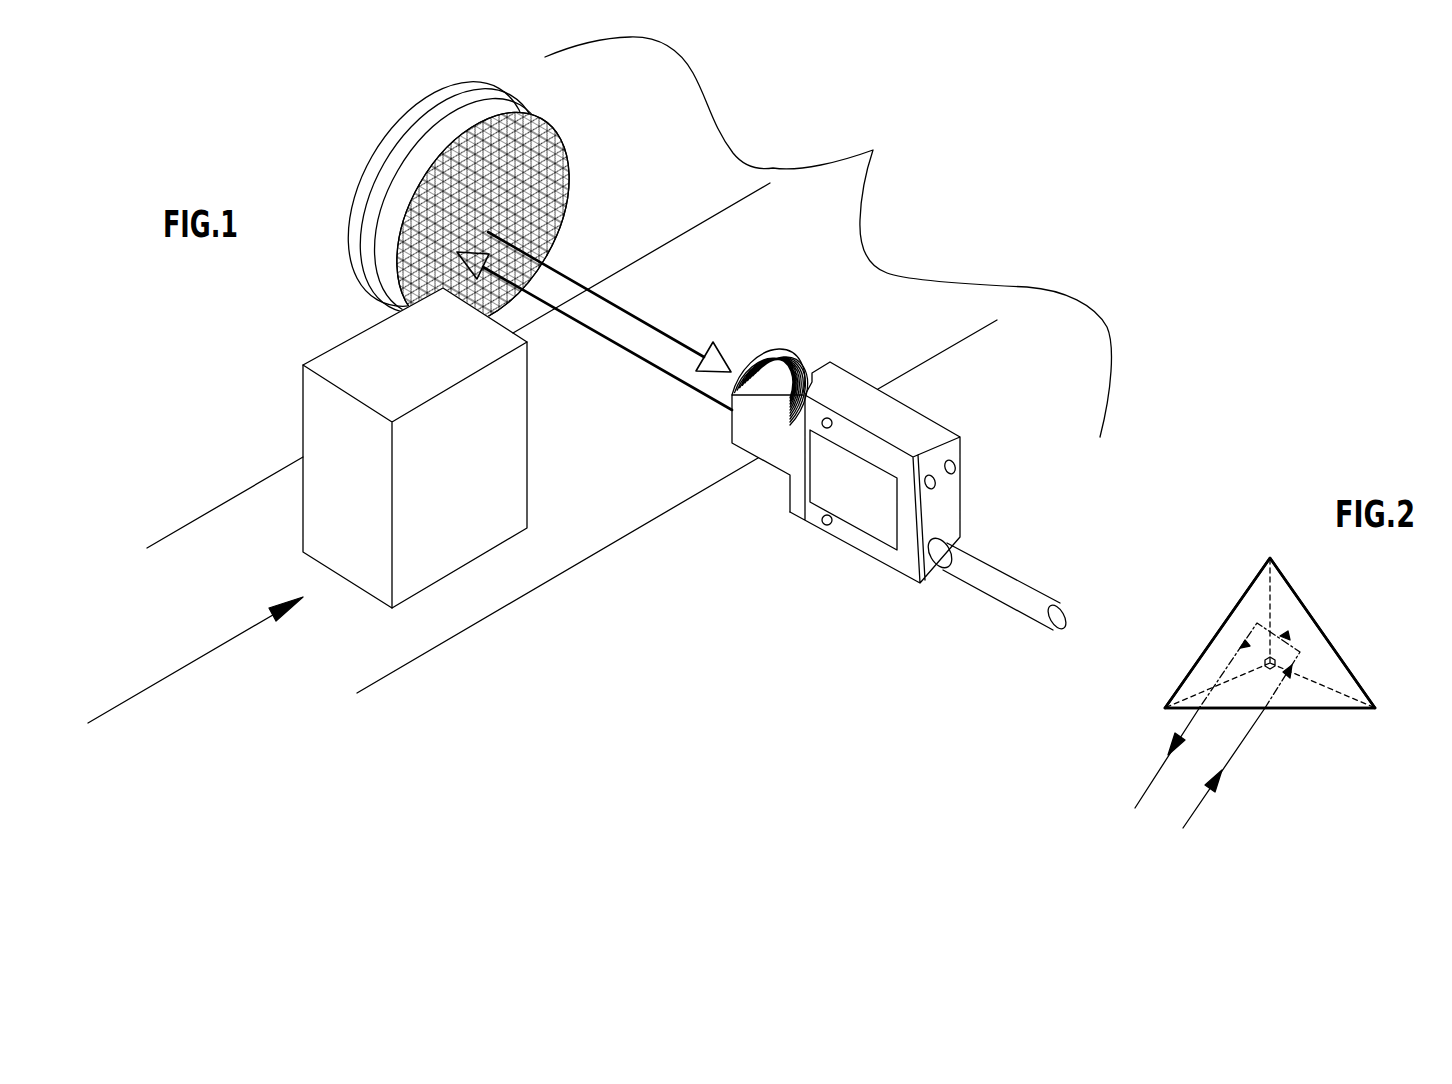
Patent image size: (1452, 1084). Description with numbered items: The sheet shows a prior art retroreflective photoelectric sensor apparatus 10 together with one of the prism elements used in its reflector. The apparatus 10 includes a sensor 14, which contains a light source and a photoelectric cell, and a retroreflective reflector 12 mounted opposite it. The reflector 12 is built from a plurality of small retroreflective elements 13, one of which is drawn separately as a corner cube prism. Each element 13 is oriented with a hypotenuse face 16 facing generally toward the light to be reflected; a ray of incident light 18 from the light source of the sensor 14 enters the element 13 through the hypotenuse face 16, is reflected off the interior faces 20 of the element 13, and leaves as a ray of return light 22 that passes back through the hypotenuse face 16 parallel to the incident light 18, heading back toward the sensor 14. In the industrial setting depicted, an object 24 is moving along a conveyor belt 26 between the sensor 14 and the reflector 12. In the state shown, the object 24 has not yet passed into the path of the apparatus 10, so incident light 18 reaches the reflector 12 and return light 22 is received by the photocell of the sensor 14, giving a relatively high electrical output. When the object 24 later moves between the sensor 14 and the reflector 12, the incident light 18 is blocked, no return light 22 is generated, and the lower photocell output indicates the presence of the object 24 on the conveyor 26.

In FIG. 1, the retroreflective photoelectric sensor apparatus 10 is at (873, 150).
In FIG. 1, the retroreflective reflector 12 is at (402, 195).
In FIG. 2, the retroreflective element 13 is at (1278, 515).
In FIG. 1, the sensor 14 is at (898, 422).
In FIG. 2, the hypotenuse face 16 is at (1305, 695).
In FIG. 1, the incident light 18 is at (603, 337).
In FIG. 2, the incident light 18 is at (1243, 743).
In FIG. 2, the interior faces 20 is at (1236, 601).
In FIG. 1, the return light 22 is at (650, 317).
In FIG. 2, the return light 22 is at (1188, 730).
In FIG. 1, the object 24 is at (327, 428).
In FIG. 1, the conveyor belt 26 is at (583, 548).